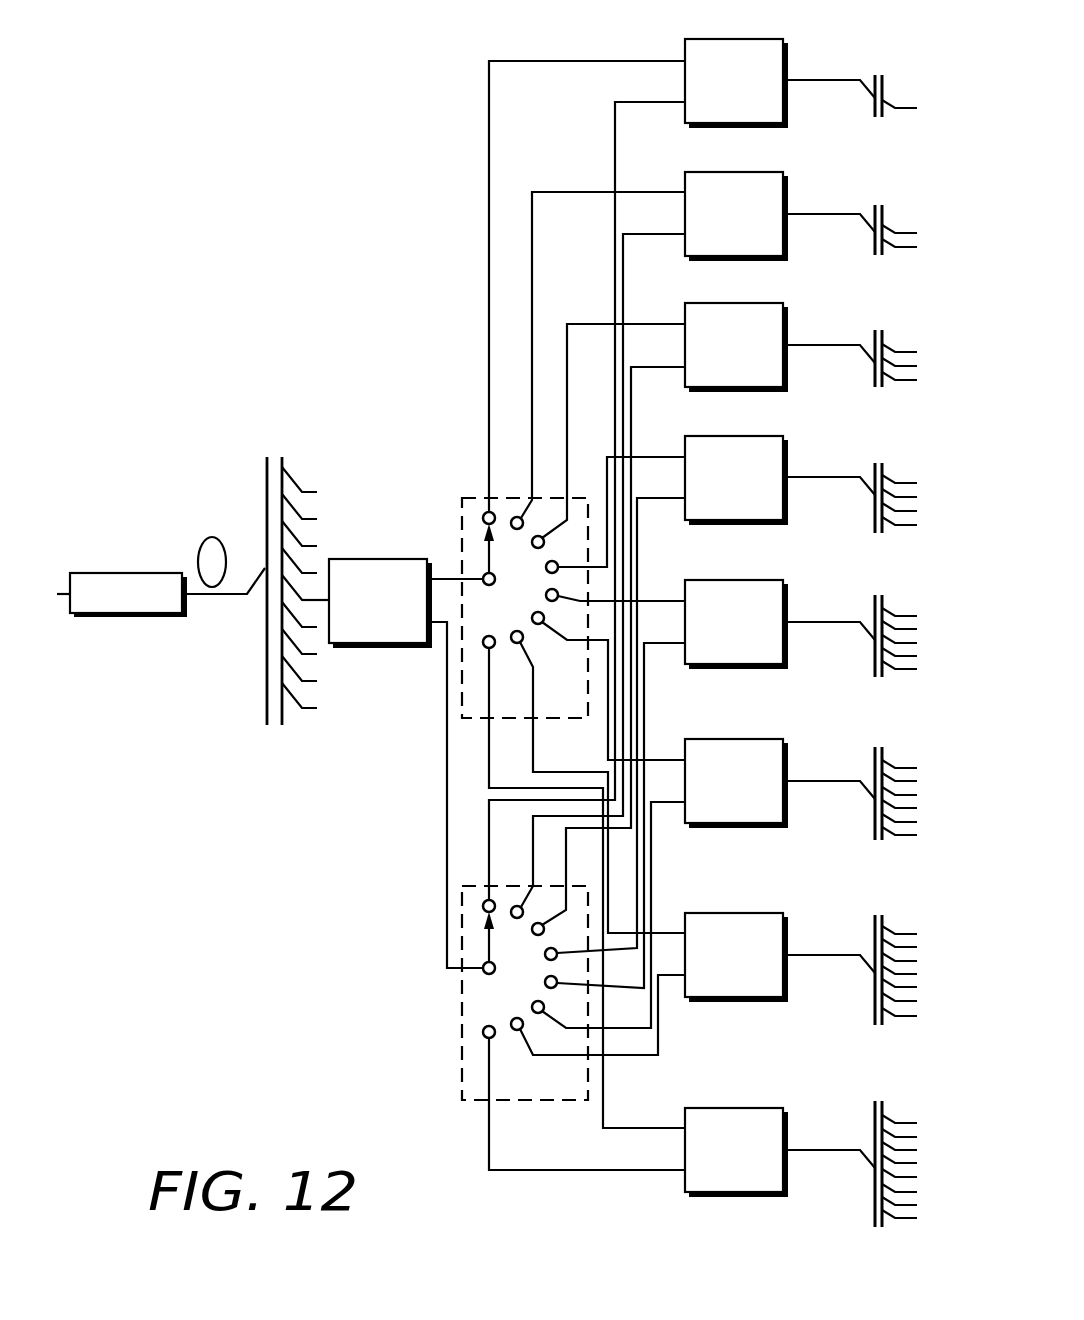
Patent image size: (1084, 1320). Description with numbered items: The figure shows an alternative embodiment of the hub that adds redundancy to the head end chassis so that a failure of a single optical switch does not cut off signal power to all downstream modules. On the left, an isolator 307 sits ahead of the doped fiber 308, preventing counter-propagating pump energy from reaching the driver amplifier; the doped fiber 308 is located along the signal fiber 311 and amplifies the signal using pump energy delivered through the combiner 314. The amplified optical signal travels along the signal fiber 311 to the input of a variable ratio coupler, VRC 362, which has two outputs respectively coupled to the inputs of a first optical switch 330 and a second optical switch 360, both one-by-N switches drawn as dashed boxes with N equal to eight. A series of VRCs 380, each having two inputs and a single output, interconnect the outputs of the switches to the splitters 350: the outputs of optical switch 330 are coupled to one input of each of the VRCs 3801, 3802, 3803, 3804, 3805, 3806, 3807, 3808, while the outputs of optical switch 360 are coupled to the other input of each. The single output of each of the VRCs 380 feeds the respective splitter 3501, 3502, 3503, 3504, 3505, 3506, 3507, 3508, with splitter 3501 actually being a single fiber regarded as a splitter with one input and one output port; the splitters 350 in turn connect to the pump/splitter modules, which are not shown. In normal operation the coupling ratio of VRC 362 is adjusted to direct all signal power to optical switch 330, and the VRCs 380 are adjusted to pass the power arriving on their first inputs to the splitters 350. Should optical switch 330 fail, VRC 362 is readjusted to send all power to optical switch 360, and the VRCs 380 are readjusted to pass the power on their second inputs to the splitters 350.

The isolator 307 is at (157, 617).
The doped fiber 308 is at (207, 541).
The signal fiber 311 is at (232, 592).
The combiner 314 is at (267, 500).
The optical switch 330 is at (462, 542).
The second optical switch 360 is at (462, 1060).
The VRC 362 is at (381, 647).
The VRCs 380 is at (716, 599).
The VRC 3801 is at (721, 39).
The VRC 3802 is at (726, 172).
The VRC 3803 is at (726, 303).
The VRC 3804 is at (726, 436).
The VRC 3805 is at (733, 580).
The VRC 3806 is at (731, 739).
The VRC 3807 is at (739, 913).
The VRC 3808 is at (733, 1108).
The splitters 350 is at (852, 651).
The splitter 3501 is at (874, 111).
The splitter 3502 is at (874, 246).
The splitter 3503 is at (874, 381).
The splitter 3504 is at (874, 511).
The splitter 3505 is at (874, 668).
The splitter 3506 is at (874, 831).
The splitter 3507 is at (874, 1011).
The splitter 3508 is at (874, 1206).